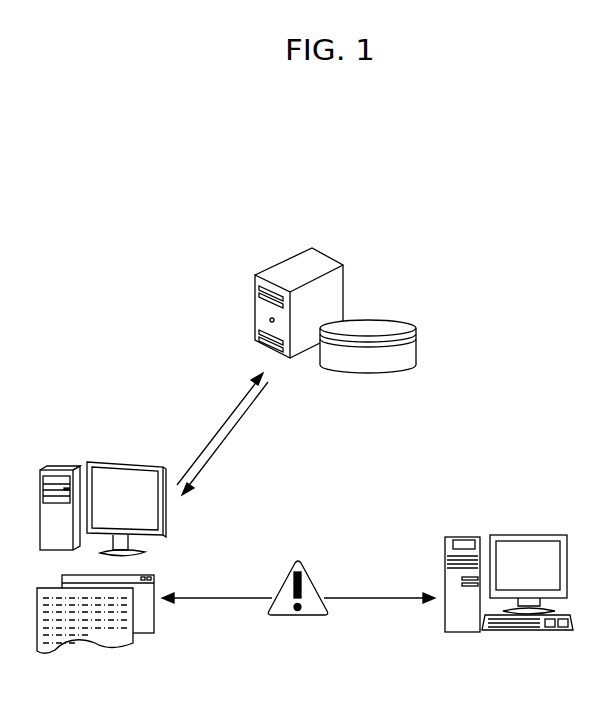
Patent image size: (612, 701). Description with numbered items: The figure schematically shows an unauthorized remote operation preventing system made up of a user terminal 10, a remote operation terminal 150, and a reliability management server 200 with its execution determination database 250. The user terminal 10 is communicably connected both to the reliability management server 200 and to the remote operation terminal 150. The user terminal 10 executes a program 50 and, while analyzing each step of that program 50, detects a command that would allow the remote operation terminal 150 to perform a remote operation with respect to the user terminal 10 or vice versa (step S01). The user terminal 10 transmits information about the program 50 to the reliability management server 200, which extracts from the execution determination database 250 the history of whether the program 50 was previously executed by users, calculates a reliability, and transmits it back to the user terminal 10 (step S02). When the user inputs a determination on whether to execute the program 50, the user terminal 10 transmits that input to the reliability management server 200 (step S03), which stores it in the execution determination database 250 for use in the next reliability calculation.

The user terminal 10 is at (57, 470).
The program 50 is at (154, 588).
The remote operation terminal 150 is at (527, 535).
The reliability management server 200 is at (343, 278).
The execution determination database 250 is at (408, 323).
The remote operation command detection step S01 is at (240, 600).
The reliability transmission step S02 is at (232, 435).
The execution determination transmission step S03 is at (220, 433).